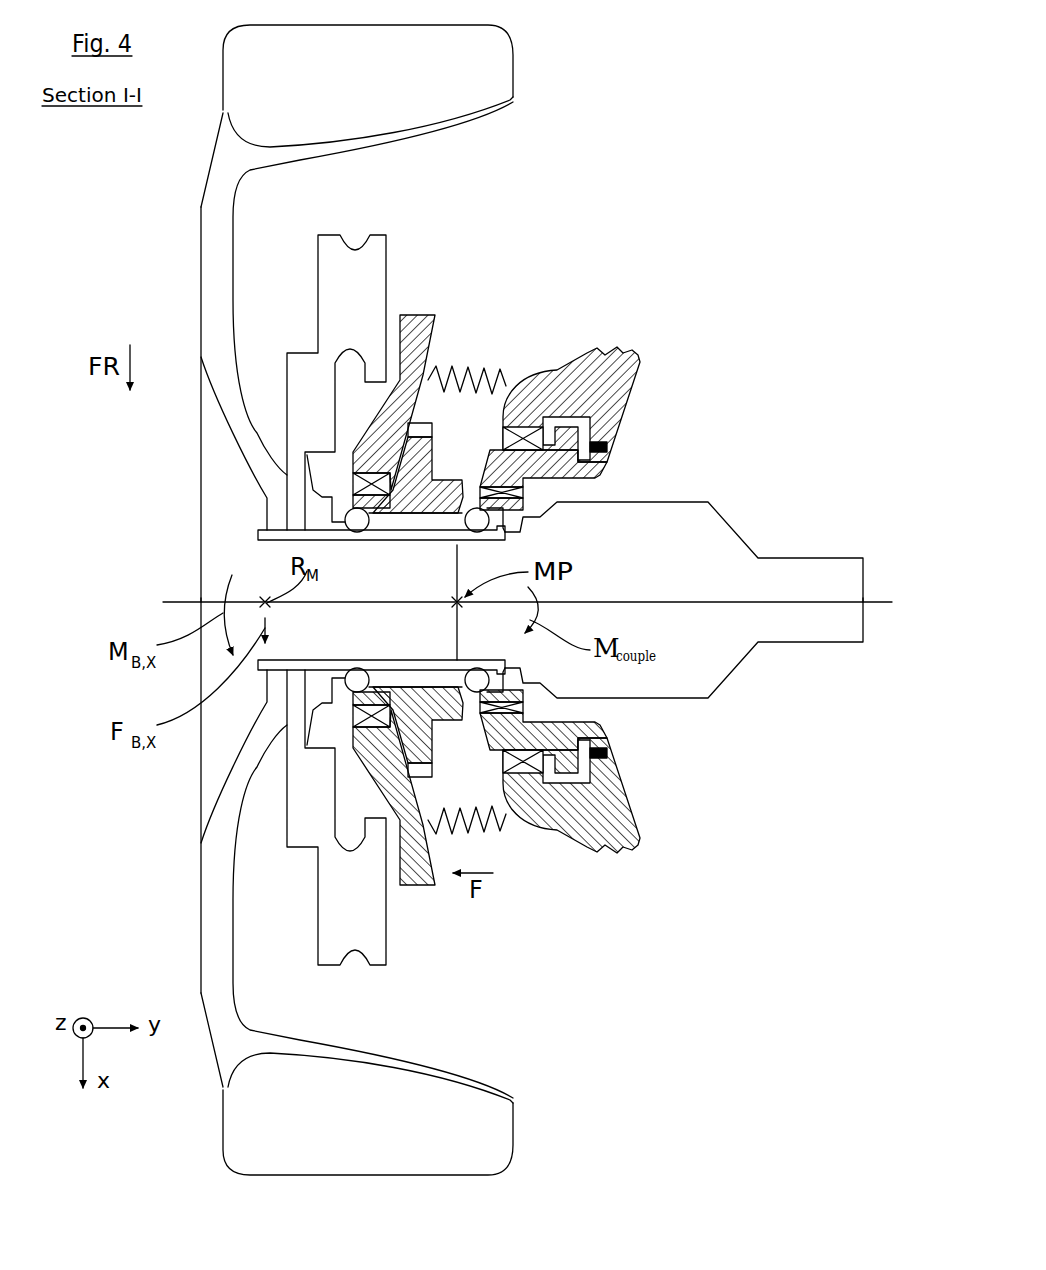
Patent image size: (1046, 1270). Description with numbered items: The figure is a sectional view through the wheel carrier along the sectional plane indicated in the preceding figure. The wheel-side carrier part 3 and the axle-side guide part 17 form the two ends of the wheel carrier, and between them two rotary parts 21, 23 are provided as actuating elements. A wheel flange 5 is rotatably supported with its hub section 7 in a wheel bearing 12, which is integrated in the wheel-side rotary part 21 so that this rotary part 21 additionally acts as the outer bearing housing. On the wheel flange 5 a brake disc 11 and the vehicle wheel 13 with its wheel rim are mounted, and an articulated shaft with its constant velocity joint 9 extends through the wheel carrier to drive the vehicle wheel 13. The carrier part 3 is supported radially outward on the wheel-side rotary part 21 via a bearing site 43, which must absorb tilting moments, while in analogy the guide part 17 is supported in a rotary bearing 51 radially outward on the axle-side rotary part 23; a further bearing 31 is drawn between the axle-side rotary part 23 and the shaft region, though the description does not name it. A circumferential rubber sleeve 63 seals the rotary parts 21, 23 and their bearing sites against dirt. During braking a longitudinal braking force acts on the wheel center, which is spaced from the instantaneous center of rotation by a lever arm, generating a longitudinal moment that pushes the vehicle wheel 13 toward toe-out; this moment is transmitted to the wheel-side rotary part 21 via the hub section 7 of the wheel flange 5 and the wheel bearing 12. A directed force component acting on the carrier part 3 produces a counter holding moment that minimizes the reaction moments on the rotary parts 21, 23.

The carrier part 3 is at (420, 316).
The wheel flange 5 is at (317, 515).
The hub section 7 is at (378, 542).
The constant velocity joint 9 is at (708, 502).
The brake disc 11 is at (366, 303).
The wheel bearing 12 is at (350, 678).
The vehicle wheel 13 is at (200, 230).
The guide part 17 is at (641, 356).
The wheel-side rotary part 21 is at (423, 460).
The axle-side rotary part 23 is at (493, 448).
The bearing 31 is at (523, 500).
The bearing site 43 is at (353, 483).
The rotary bearing 51 is at (505, 427).
The rubber sleeve 63 is at (505, 390).